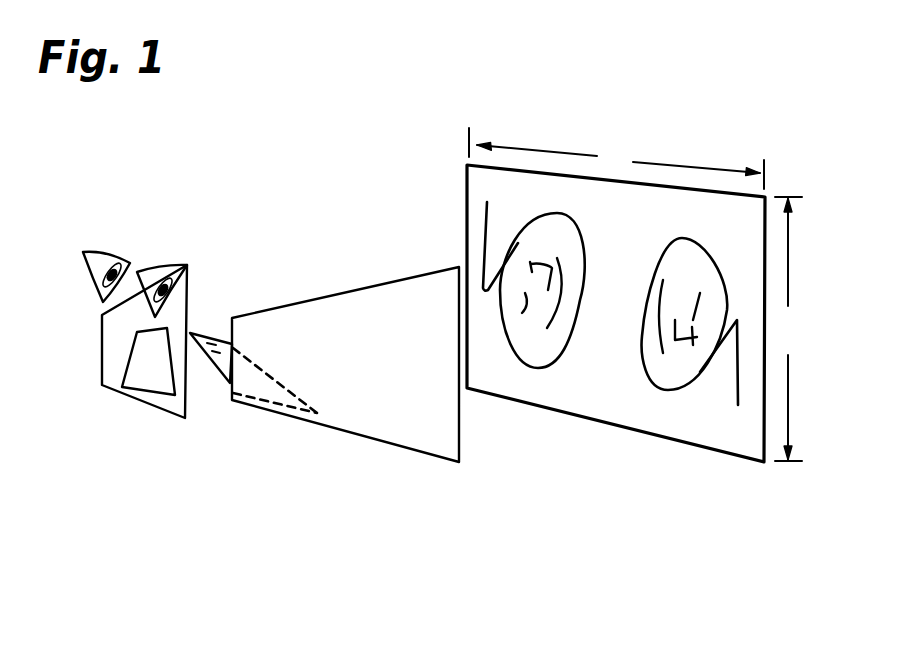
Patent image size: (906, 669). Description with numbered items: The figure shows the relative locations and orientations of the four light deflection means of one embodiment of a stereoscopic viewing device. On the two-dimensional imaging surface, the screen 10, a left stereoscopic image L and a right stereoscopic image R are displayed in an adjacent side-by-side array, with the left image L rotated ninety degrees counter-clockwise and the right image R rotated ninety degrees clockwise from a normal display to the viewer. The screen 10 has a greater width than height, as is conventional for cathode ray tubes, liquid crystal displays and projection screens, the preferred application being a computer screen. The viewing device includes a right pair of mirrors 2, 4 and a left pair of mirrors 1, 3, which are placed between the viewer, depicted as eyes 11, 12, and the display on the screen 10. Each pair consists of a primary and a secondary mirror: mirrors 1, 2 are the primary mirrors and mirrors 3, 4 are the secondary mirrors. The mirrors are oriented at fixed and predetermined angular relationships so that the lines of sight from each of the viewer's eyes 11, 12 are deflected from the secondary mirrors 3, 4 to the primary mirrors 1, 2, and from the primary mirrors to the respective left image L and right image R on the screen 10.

The primary mirror 1 is at (110, 338).
The secondary mirror 3 is at (155, 368).
The eye 11 is at (95, 260).
The eye 12 is at (140, 275).
The secondary mirror 4 is at (211, 333).
The primary mirror 2 is at (393, 320).
The screen 10 is at (485, 183).
The left stereoscopic image L is at (541, 362).
The right stereoscopic image R is at (663, 383).